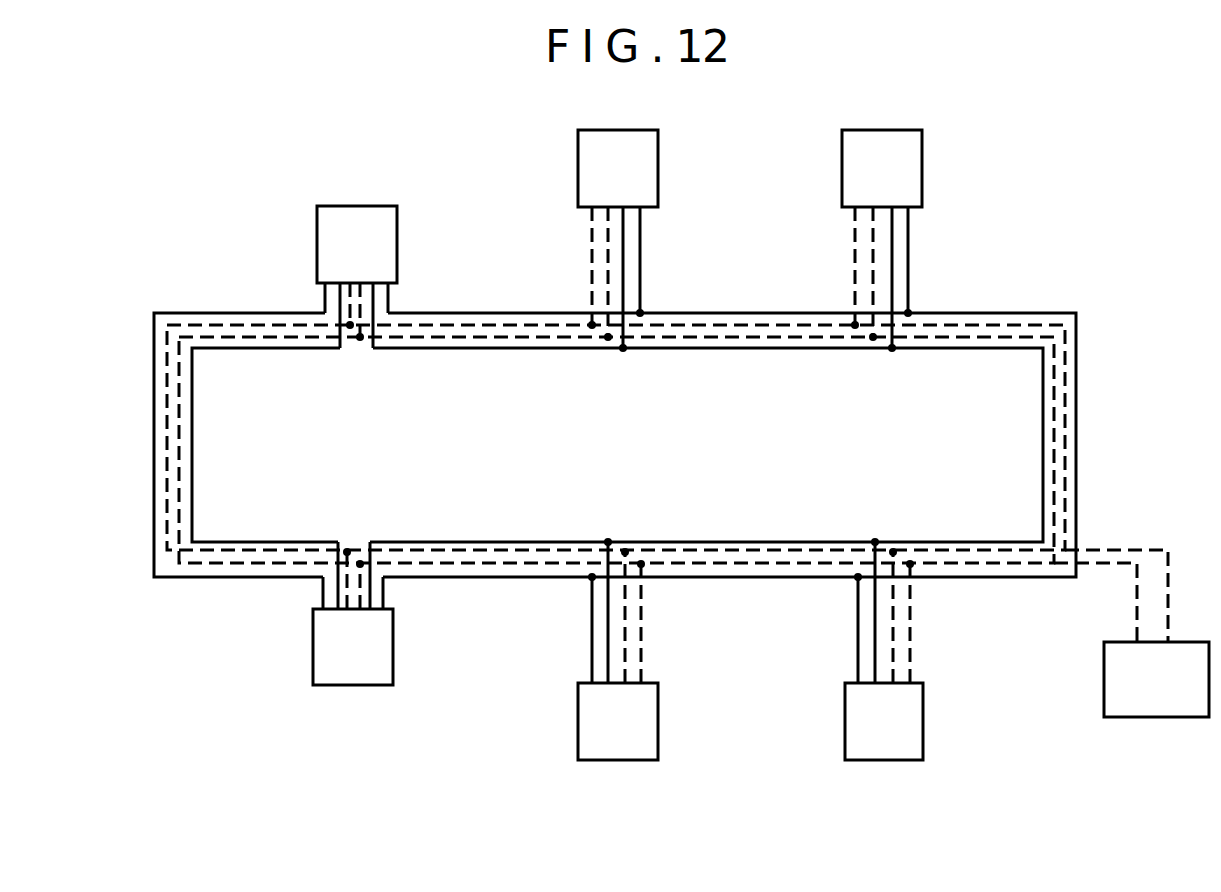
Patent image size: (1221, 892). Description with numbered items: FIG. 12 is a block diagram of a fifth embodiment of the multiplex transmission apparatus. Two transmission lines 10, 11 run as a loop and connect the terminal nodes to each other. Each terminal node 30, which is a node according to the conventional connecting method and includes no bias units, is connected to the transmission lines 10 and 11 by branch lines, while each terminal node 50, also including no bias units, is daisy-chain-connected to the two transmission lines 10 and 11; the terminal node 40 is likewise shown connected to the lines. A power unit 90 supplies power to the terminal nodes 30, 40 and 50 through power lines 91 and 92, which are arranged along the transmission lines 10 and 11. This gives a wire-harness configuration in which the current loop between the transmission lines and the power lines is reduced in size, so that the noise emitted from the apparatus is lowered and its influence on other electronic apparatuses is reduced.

The transmission line 10 is at (193, 445).
The transmission line 11 is at (153, 445).
The terminal node 30 is at (659, 140).
The terminal node 40 is at (368, 435).
The terminal node 50 is at (355, 705).
The power unit 90 is at (1180, 717).
The power line 91 is at (1170, 620).
The power line 92 is at (1135, 620).